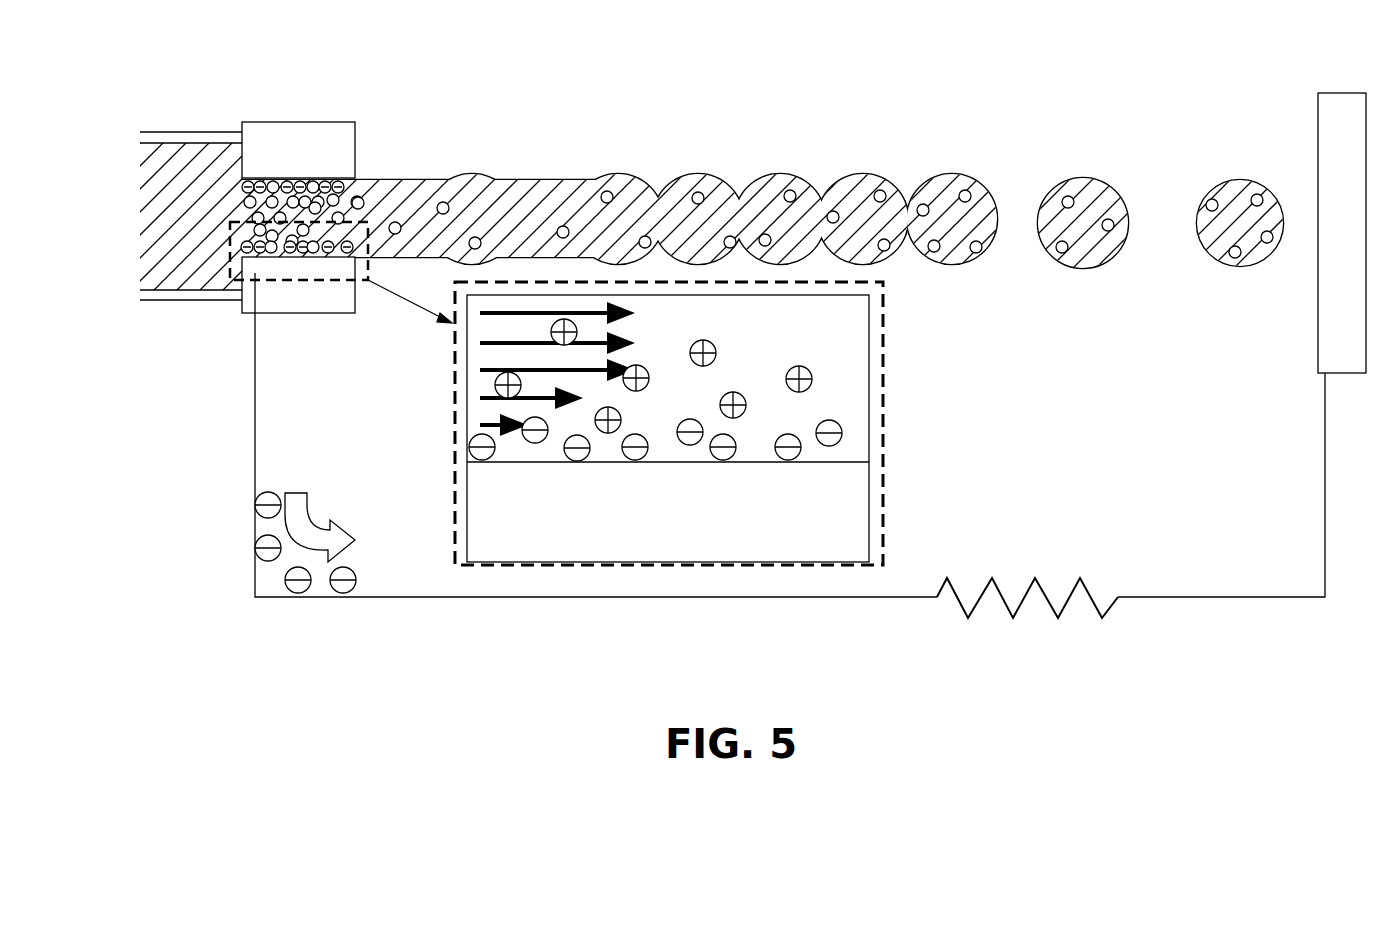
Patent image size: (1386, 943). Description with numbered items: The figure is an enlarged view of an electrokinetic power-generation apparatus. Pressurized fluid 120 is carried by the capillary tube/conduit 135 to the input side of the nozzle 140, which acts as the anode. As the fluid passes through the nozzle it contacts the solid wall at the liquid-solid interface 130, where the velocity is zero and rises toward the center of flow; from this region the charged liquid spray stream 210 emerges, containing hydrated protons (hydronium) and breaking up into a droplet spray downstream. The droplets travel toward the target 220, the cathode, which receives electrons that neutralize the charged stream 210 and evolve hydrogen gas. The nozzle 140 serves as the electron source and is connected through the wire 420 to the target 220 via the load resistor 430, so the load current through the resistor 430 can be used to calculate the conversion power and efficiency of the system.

The fluid 120 is at (160, 223).
The liquid-solid interface 130 is at (870, 430).
The capillary tube/conduit 135 is at (198, 302).
The nozzle 140 is at (366, 132).
The charged liquid spray stream 210 is at (523, 180).
The target 220 is at (1318, 317).
The wire 420 is at (475, 597).
The load resistor 430 is at (1015, 618).